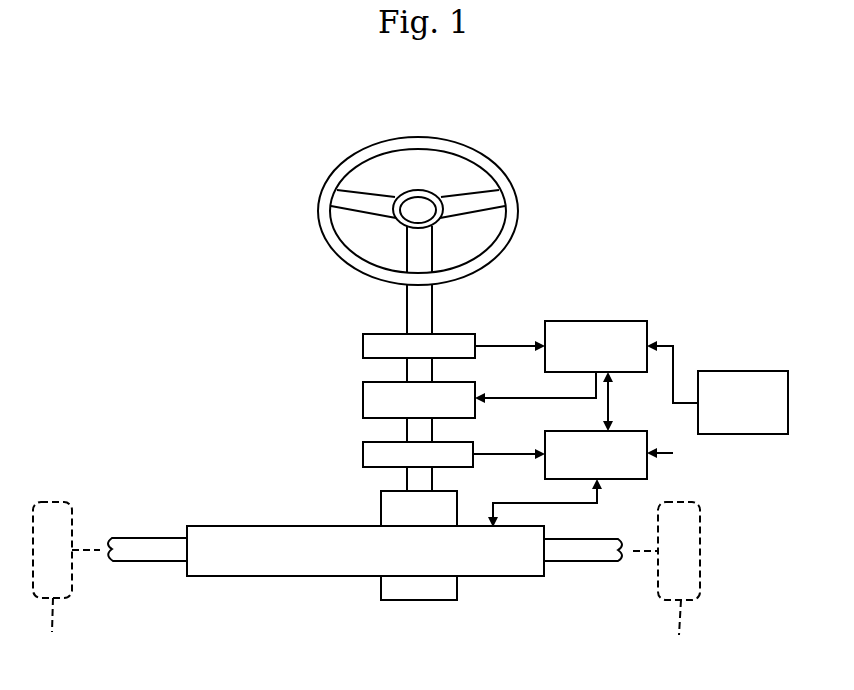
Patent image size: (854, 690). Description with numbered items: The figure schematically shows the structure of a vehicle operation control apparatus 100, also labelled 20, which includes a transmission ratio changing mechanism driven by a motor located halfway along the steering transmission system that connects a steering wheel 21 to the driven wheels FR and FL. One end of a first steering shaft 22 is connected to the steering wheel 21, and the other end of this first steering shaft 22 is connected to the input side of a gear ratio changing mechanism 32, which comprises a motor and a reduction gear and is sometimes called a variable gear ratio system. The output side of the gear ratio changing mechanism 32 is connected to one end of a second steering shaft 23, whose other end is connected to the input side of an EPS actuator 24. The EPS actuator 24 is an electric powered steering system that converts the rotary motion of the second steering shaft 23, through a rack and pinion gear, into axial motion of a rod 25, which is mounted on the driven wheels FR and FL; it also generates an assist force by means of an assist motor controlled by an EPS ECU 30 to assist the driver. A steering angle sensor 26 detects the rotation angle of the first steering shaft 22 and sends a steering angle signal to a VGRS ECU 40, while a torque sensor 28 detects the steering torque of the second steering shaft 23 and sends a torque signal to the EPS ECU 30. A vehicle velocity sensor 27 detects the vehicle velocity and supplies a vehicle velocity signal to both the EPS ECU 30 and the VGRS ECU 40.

The vehicle steering apparatus 20 is at (232, 228).
The vehicle operation control apparatus 100 is at (366, 385).
The steering wheel 21 is at (472, 145).
The first steering shaft 22 is at (433, 308).
The second steering shaft 23 is at (405, 480).
The EPS actuator 24 is at (298, 576).
The rod 25 is at (147, 562).
The steering angle sensor 26 is at (362, 347).
The vehicle velocity sensor 27 is at (745, 371).
The torque sensor 28 is at (362, 456).
The EPS ECU 30 is at (627, 480).
The gear ratio changing mechanism 32 is at (362, 402).
The VGRS ECU 40 is at (595, 321).